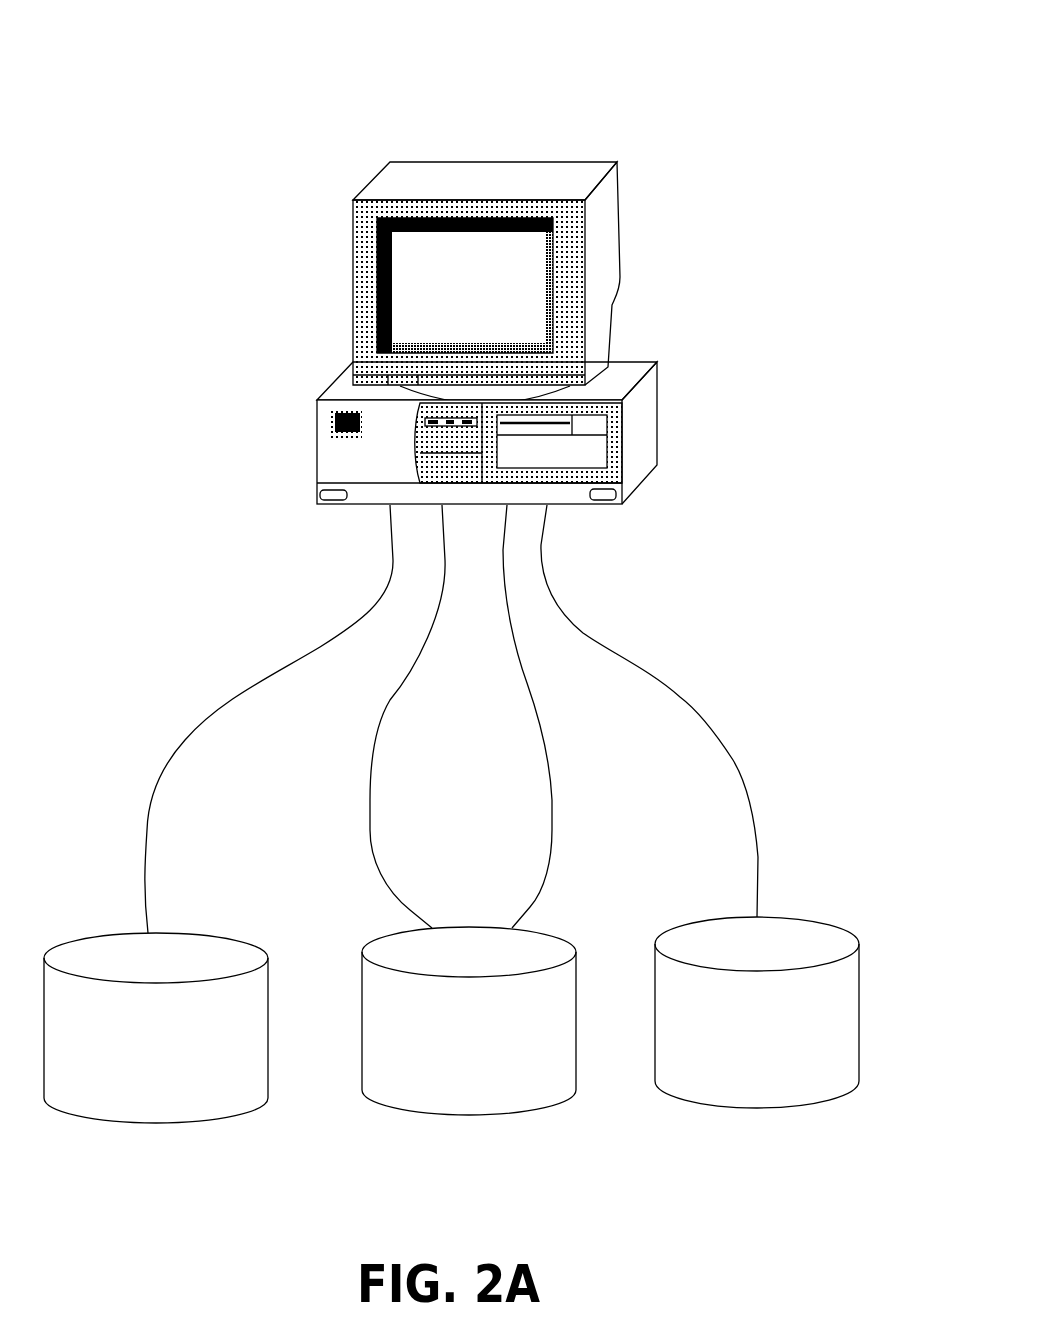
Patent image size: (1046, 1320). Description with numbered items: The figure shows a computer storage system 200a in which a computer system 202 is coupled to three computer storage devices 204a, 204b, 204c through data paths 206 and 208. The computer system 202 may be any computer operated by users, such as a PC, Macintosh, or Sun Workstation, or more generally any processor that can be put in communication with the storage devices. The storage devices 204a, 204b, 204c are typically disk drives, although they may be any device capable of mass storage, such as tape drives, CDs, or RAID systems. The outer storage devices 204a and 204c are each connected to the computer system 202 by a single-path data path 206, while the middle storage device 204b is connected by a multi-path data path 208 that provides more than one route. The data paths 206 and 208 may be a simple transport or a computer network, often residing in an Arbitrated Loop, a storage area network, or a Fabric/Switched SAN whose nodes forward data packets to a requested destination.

The computer storage system 200a is at (691, 48).
The computer system 202 is at (623, 222).
The computer storage device 204a is at (183, 1083).
The computer storage device 204b is at (505, 1080).
The computer storage device 204c is at (792, 1072).
The single-path data path 206 is at (243, 681).
The multi-path data path 208 is at (543, 856).